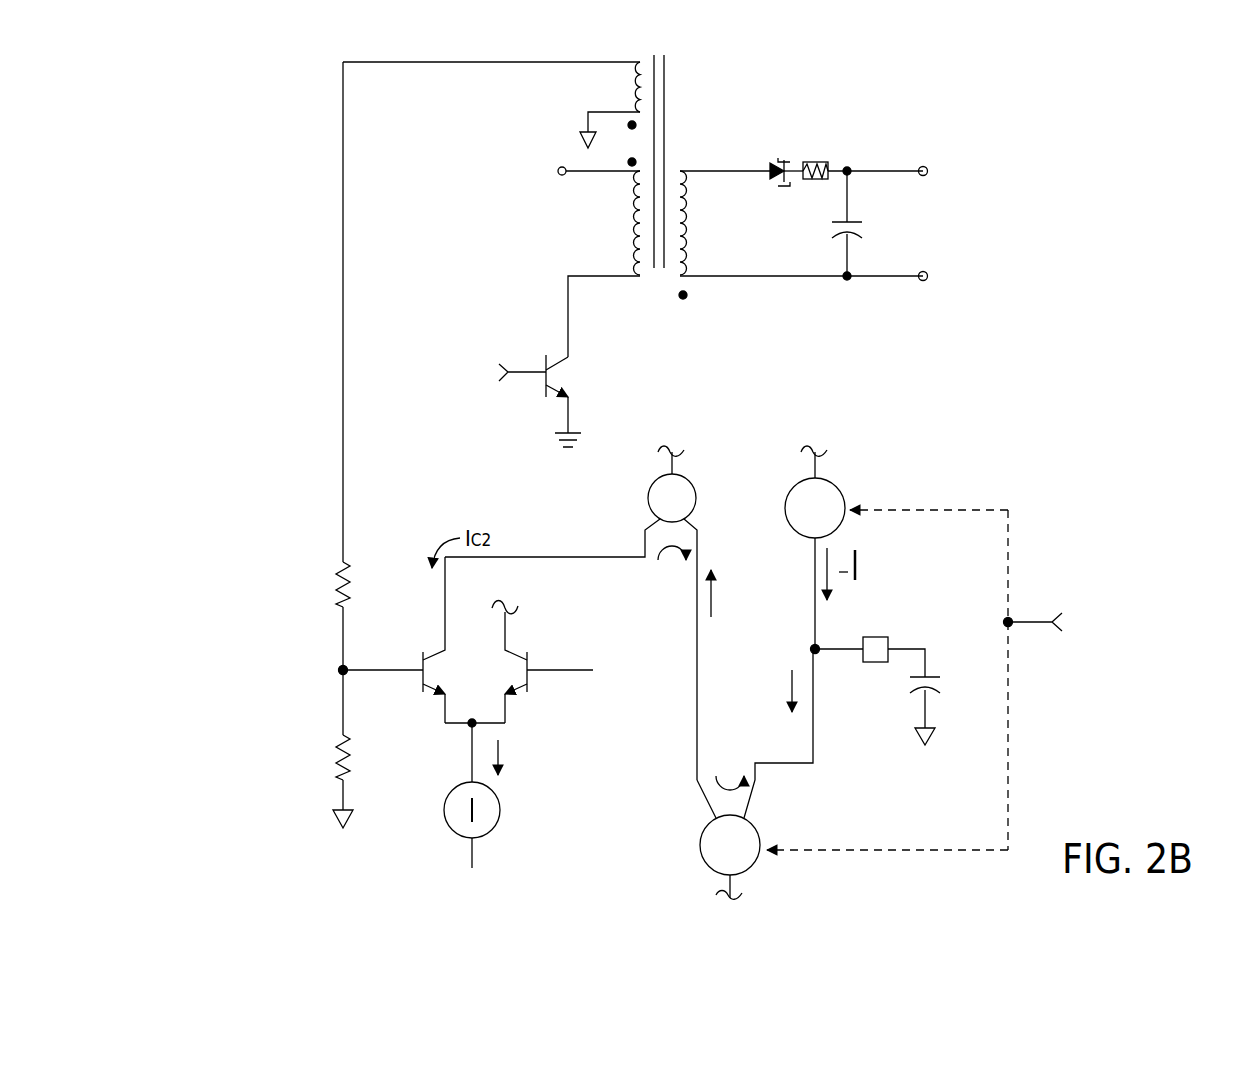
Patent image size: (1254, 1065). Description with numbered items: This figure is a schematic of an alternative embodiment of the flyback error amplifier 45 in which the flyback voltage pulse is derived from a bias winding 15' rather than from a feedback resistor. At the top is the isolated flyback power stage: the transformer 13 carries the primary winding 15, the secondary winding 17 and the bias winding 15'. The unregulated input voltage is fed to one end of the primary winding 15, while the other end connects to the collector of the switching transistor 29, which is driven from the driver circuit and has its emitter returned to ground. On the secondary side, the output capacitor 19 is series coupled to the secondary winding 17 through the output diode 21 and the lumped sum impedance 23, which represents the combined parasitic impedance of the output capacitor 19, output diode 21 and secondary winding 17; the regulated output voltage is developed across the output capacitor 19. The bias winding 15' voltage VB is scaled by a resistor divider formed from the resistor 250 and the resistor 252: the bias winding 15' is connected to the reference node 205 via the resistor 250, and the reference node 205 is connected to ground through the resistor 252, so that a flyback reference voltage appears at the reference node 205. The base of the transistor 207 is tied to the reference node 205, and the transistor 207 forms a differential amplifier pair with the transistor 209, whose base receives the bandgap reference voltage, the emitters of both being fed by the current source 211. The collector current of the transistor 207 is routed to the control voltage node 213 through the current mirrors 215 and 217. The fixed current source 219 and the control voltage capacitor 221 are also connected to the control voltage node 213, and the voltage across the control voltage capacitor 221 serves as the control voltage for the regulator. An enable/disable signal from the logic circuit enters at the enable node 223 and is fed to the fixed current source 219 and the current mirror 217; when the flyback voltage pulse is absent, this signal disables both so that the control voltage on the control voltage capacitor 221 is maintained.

The transformer 13 is at (692, 148).
The primary winding 15 is at (605, 257).
The bias winding 15' is at (618, 83).
The secondary winding 17 is at (686, 278).
The output capacitor 19 is at (856, 236).
The output diode 21 is at (769, 162).
The lumped sum impedance 23 is at (815, 162).
The switching transistor 29 is at (558, 360).
The flyback error amplifier 45 is at (230, 602).
The reference node 205 is at (338, 674).
The transistor 207 is at (428, 650).
The transistor 209 is at (513, 648).
The current source 211 is at (500, 805).
The control voltage node 213 is at (810, 649).
The current mirror 215 is at (690, 483).
The current mirror 217 is at (703, 858).
The fixed current source 219 is at (835, 485).
The control voltage capacitor 221 is at (930, 677).
The enable node 223 is at (1010, 622).
The resistor 250 is at (348, 573).
The resistor 252 is at (338, 772).